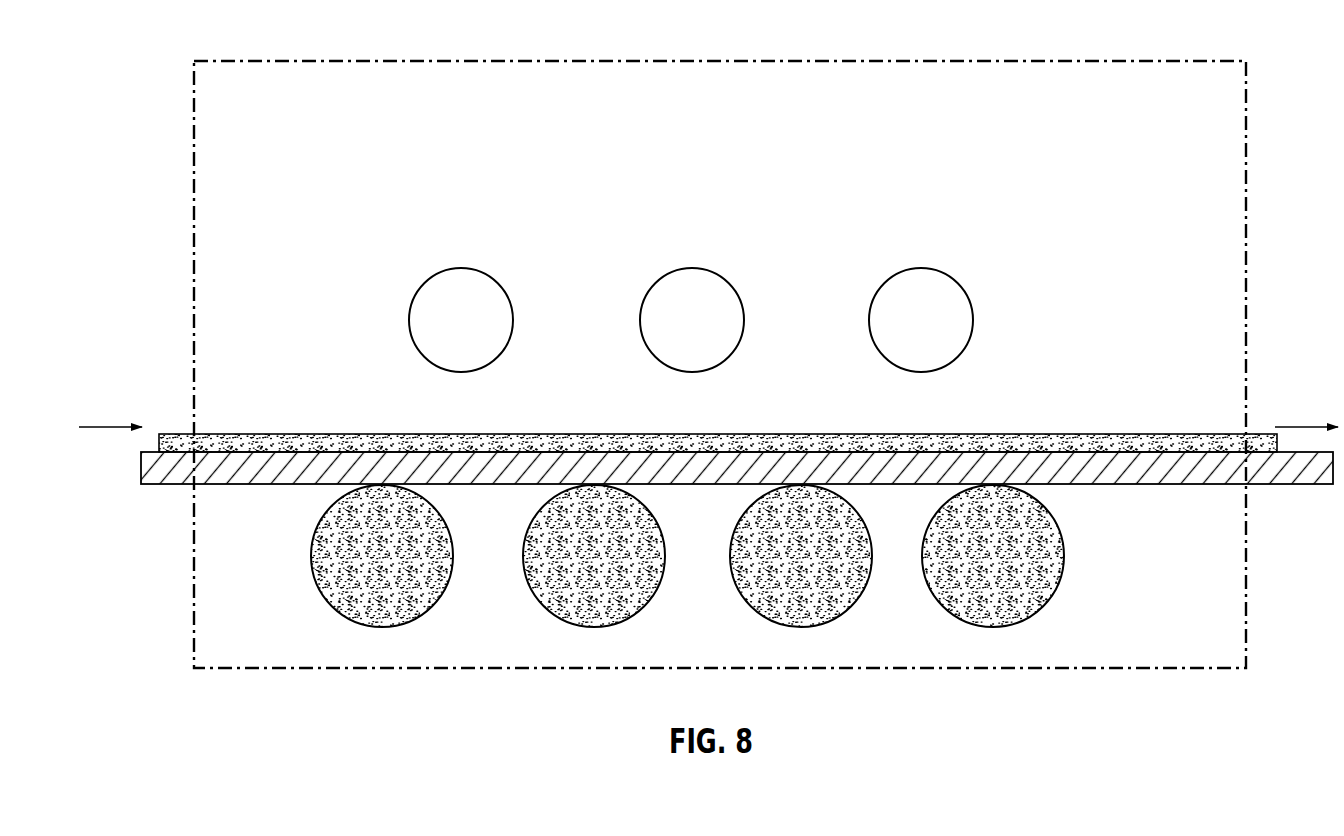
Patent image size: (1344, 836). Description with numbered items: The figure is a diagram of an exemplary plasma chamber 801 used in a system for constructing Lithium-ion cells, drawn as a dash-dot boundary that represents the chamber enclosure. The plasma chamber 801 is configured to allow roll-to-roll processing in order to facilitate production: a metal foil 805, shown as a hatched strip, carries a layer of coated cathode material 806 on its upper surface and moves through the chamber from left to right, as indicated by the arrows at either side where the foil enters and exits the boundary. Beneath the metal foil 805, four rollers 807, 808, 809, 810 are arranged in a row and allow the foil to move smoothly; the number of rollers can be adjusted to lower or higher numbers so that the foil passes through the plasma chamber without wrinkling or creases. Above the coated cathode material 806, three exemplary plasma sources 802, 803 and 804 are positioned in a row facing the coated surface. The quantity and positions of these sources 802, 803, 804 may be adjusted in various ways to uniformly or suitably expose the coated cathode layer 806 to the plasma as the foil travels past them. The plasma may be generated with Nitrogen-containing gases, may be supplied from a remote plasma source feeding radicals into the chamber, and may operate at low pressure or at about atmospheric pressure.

The plasma chamber 801 is at (281, 61).
The plasma source 802 is at (508, 291).
The plasma source 803 is at (733, 283).
The plasma source 804 is at (953, 277).
The metal foil 805 is at (258, 484).
The coated cathode material 806 is at (242, 434).
The roller 807 is at (348, 618).
The roller 808 is at (560, 618).
The roller 809 is at (767, 618).
The roller 810 is at (959, 618).